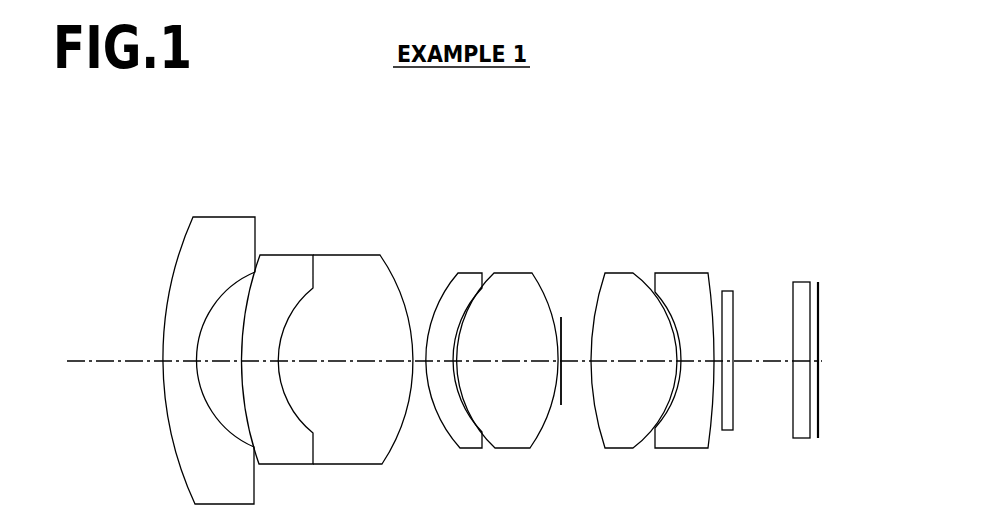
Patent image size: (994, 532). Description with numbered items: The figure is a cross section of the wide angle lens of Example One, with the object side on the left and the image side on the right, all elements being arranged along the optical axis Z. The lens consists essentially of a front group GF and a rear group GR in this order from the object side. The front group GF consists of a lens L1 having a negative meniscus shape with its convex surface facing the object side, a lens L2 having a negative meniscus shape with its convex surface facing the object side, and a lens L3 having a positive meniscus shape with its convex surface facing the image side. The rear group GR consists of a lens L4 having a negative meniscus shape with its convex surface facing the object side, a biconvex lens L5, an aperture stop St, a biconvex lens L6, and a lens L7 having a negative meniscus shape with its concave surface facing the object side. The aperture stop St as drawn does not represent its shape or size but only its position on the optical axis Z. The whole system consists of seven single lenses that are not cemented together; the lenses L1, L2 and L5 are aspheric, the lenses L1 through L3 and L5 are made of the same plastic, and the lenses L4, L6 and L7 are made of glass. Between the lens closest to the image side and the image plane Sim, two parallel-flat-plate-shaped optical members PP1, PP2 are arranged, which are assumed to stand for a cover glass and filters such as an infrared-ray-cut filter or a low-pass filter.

The optical axis Z is at (83, 360).
The front group GF is at (207, 132).
The rear group GR is at (696, 162).
The lens L1 is at (225, 223).
The lens L2 is at (290, 262).
The lens L3 is at (358, 262).
The lens L4 is at (467, 280).
The lens L5 is at (518, 280).
The lens L6 is at (623, 280).
The lens L7 is at (678, 280).
The aperture stop St is at (561, 317).
The optical member PP1 is at (728, 292).
The optical member PP2 is at (803, 283).
The image plane Sim is at (818, 438).